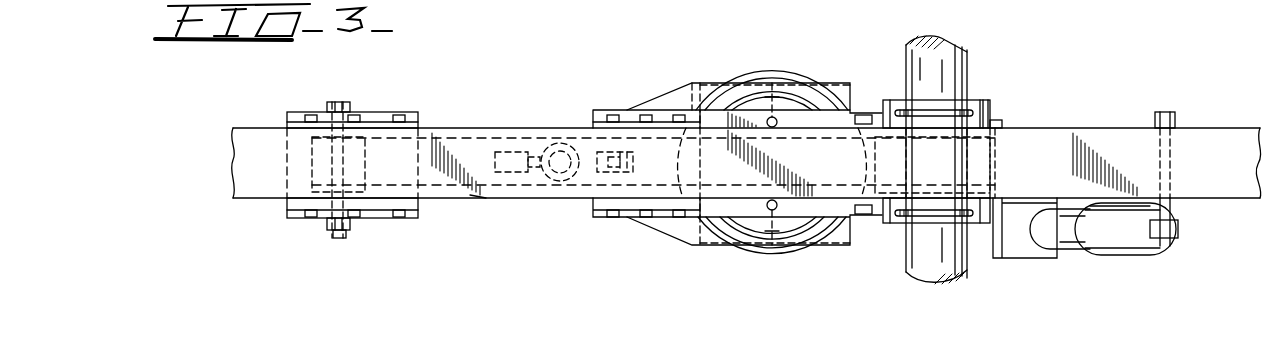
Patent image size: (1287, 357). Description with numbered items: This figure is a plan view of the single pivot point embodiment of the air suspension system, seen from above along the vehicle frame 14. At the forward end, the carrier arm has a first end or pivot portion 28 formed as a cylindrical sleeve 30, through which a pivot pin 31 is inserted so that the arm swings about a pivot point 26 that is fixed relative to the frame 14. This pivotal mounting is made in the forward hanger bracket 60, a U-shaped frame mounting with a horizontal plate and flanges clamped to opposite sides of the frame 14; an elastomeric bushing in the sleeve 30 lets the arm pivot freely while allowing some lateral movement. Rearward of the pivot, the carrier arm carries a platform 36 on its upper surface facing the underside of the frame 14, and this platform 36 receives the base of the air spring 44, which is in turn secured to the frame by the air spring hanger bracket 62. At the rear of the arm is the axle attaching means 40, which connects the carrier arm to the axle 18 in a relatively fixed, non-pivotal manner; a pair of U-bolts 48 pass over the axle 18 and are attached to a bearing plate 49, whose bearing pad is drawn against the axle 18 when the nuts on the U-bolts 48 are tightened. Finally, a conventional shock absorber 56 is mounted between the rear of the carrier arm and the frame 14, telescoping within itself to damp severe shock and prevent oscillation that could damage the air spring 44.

The frame 14 is at (475, 128).
The axle 18 is at (953, 63).
The pivot point 26 is at (340, 240).
The first end or pivot portion 28 is at (478, 197).
The cylindrical sleeve 30 is at (366, 140).
The pivot pin 31 is at (338, 145).
The platform 36 is at (702, 83).
The axle attaching means 40 is at (993, 113).
The air spring 44 is at (795, 83).
The U-bolts 48 is at (898, 111).
The bearing plate 49 is at (982, 103).
The shock absorber 56 is at (1117, 255).
The forward hanger bracket 60 is at (404, 112).
The air spring hanger bracket 62 is at (610, 215).